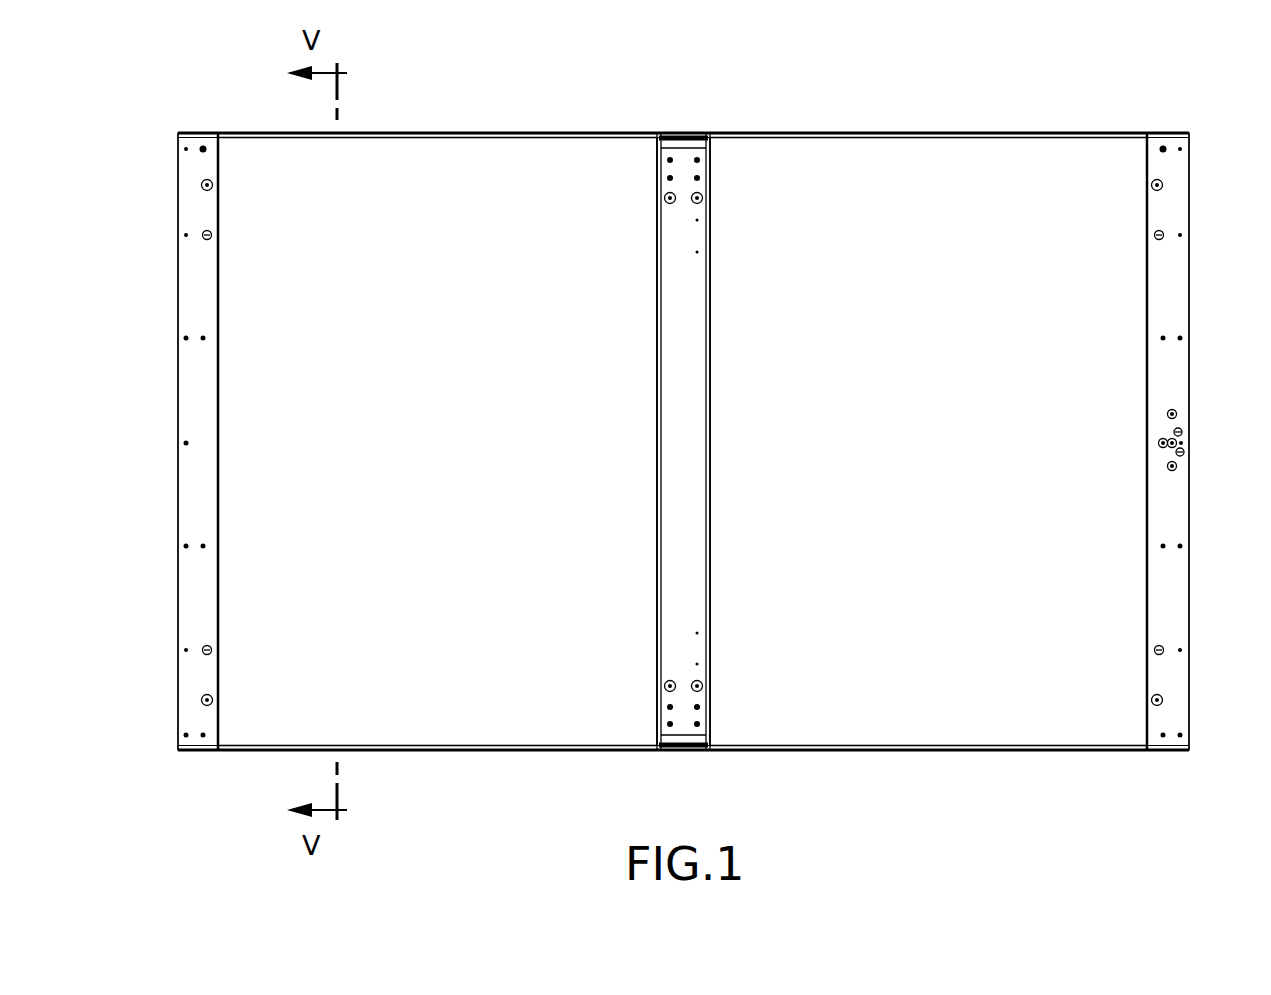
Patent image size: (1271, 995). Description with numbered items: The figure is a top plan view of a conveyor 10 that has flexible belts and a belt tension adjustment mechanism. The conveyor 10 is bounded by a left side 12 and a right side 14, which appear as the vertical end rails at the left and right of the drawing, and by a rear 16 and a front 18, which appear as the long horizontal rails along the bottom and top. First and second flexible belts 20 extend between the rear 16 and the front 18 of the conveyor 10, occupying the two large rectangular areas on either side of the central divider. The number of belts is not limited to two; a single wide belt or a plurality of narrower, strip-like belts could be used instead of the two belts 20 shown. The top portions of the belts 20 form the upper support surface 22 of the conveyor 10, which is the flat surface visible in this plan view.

The conveyor 10 is at (584, 97).
The left side 12 is at (178, 446).
The right side 14 is at (1189, 371).
The rear 16 is at (757, 752).
The front 18 is at (860, 132).
The flexible belts 20 is at (460, 185).
The upper support surface 22 is at (461, 451).